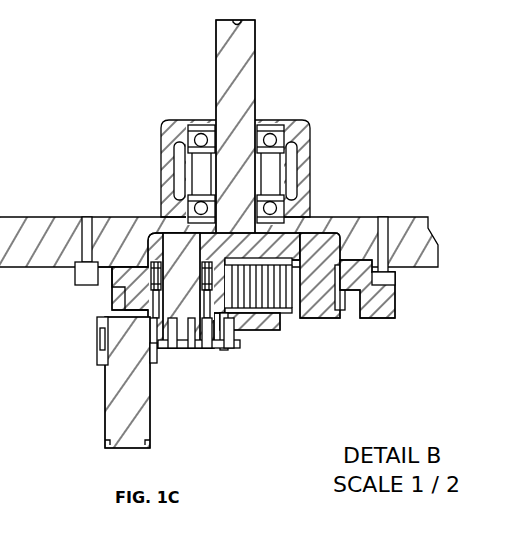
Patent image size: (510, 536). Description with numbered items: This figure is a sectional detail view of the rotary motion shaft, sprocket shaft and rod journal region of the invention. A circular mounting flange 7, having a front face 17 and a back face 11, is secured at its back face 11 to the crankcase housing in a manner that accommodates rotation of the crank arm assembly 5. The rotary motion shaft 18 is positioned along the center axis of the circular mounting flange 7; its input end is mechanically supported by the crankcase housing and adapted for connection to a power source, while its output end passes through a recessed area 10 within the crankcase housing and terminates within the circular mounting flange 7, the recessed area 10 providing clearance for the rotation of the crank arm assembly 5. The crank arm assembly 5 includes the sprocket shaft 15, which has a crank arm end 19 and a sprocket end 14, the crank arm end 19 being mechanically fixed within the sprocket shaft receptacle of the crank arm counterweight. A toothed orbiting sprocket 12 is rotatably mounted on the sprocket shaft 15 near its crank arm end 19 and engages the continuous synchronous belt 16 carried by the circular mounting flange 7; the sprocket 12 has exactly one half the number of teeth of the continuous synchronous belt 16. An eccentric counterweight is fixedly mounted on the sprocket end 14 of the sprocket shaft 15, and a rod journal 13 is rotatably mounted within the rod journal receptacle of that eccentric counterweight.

The crank arm assembly 5 is at (318, 250).
The circular mounting flange 7 is at (362, 271).
The recessed area 10 is at (140, 235).
The back face 11 is at (103, 253).
The toothed orbiting sprocket 12 is at (127, 298).
The rod journal 13 is at (128, 393).
The sprocket end 14 is at (183, 340).
The sprocket shaft 15 is at (192, 298).
The continuous synchronous belt 16 is at (290, 318).
The front face 17 is at (270, 300).
The rotary motion shaft 18 is at (257, 52).
The crank arm end 19 is at (175, 233).